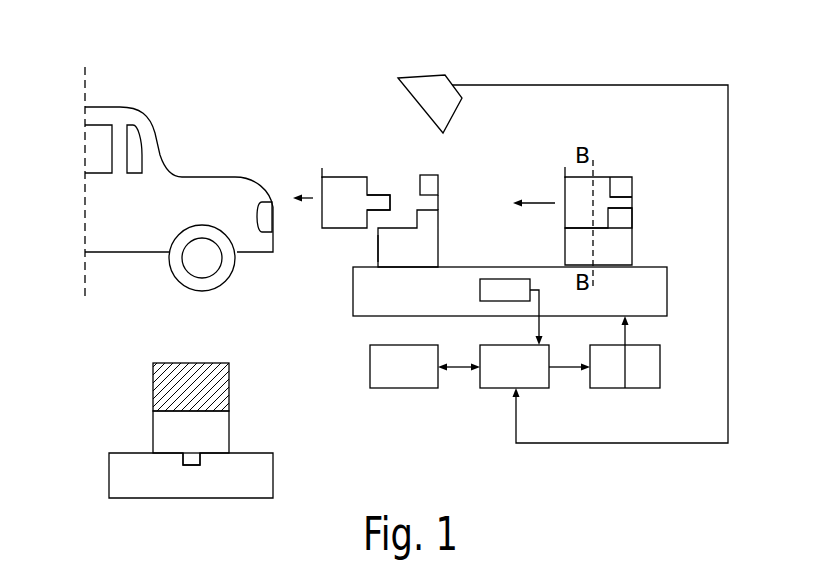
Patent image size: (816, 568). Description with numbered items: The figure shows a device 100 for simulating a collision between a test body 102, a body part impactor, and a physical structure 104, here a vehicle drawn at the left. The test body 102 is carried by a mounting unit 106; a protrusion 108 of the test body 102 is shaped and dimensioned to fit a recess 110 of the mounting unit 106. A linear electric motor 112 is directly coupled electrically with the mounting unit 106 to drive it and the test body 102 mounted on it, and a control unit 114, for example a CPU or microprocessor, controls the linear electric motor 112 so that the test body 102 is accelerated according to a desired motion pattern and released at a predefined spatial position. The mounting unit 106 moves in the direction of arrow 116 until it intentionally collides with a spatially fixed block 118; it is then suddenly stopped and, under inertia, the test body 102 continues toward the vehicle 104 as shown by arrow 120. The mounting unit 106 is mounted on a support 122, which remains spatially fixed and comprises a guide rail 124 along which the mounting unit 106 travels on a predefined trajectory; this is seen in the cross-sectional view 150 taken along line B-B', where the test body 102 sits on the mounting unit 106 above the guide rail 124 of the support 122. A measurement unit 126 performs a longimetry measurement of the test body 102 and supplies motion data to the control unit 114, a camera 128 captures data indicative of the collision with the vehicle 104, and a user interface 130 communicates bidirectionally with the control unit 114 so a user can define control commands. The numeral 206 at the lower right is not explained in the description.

The device 100 is at (251, 59).
The test body 102 is at (322, 176).
The physical structure 104 is at (162, 155).
The mounting unit 106 is at (449, 240).
The protrusion 108 is at (376, 195).
The recess 110 is at (432, 203).
The linear electric motor 112 is at (633, 388).
The control unit 114 is at (503, 388).
The arrow 116 is at (533, 201).
The spatially fixed block 118 is at (378, 240).
The arrow 120 is at (312, 201).
The support 122 is at (353, 310).
The guide rail 124 is at (195, 478).
The measurement unit 126 is at (480, 285).
The camera 128 is at (406, 90).
The user interface 130 is at (407, 388).
The cross-sectional view 150 is at (130, 373).
The housing 206 is at (632, 567).